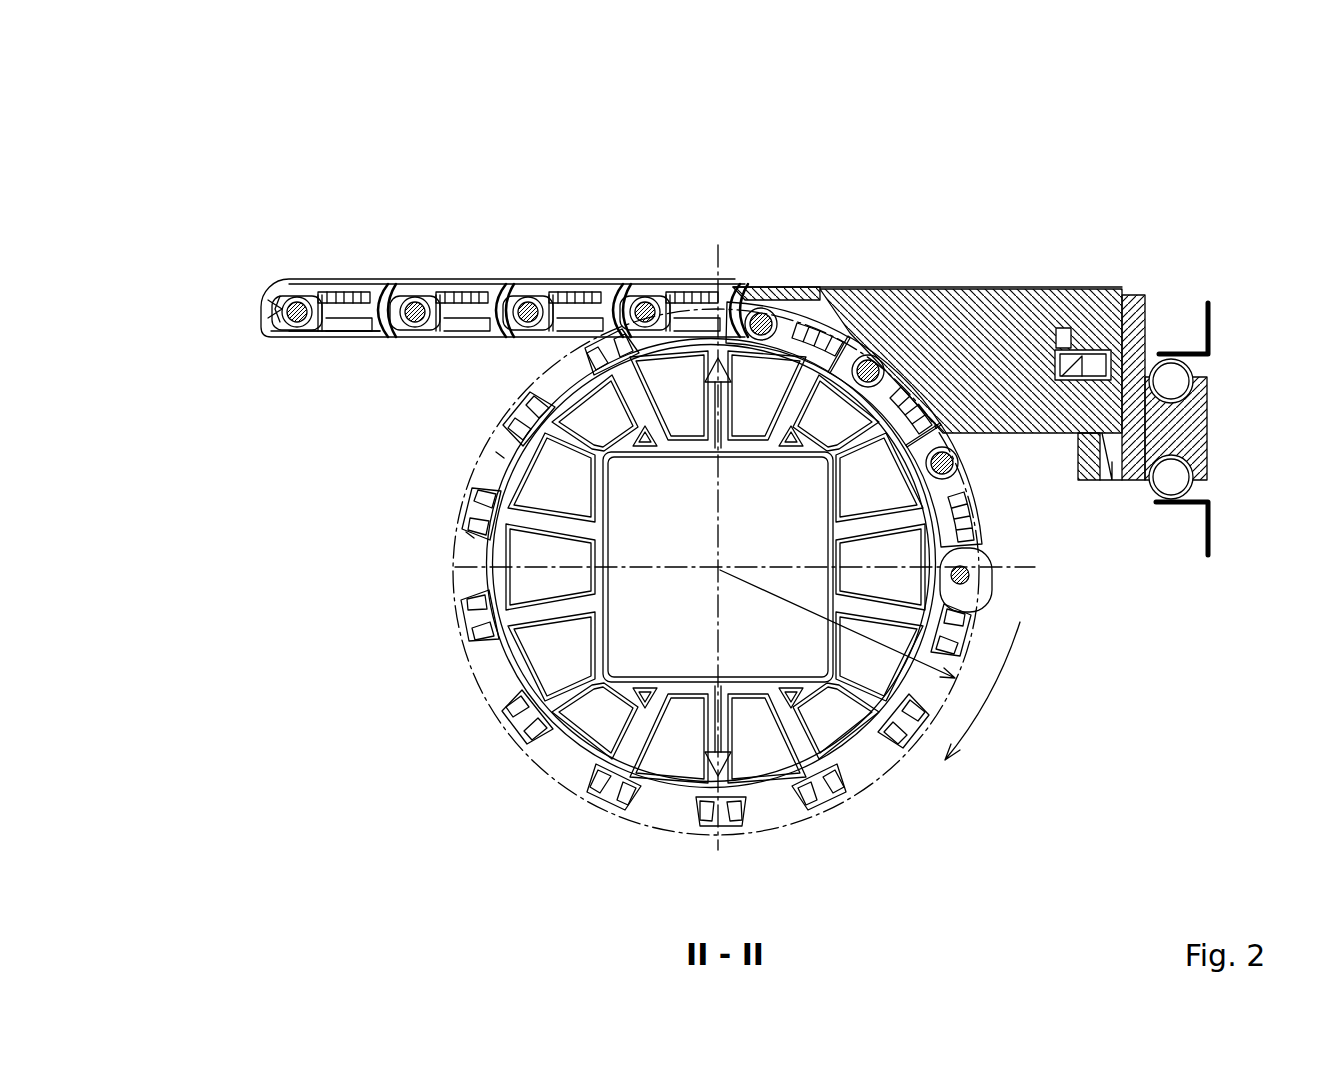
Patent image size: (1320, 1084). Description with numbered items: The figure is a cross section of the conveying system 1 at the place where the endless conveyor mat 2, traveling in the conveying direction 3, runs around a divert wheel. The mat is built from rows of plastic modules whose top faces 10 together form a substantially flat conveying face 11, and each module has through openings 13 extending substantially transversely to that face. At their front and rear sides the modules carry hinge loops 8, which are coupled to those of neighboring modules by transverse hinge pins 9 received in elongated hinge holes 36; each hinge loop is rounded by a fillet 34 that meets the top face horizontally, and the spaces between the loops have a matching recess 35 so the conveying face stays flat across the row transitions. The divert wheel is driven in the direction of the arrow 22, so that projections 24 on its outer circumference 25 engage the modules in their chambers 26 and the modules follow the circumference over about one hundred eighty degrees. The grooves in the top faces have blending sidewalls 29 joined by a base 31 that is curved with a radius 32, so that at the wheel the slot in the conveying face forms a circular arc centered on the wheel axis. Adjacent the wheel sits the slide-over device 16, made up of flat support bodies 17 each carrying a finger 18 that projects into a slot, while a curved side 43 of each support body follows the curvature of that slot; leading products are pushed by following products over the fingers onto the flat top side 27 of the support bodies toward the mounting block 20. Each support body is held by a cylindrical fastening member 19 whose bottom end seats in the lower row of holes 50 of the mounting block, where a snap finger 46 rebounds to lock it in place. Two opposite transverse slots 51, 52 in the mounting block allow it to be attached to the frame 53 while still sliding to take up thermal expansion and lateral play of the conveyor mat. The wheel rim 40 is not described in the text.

The conveying system 1 is at (233, 711).
The conveyor mat 2 is at (612, 298).
The conveying direction 3 is at (418, 128).
The hinge loops 8 is at (980, 572).
The hinge pins 9 is at (408, 330).
The top face 10 is at (358, 292).
The conveying face 11 is at (589, 255).
The through openings 13 is at (322, 325).
The slide-over device 16 is at (1090, 243).
The support bodies 17 is at (1000, 348).
The finger 18 is at (748, 290).
The fastening member 19 is at (1098, 482).
The mounting block 20 is at (1135, 470).
The arrow 22 is at (987, 691).
The projections 24 is at (474, 502).
The outer circumference 25 is at (505, 458).
The chambers 26 is at (350, 325).
The top side 27 is at (930, 291).
The sidewall 29 is at (300, 292).
The base 31 is at (332, 300).
The radius 32 is at (837, 624).
The fillet 34 is at (266, 296).
The recess 35 is at (964, 562).
The hinge hole 36 is at (286, 330).
The wheel rim 40 is at (488, 530).
The curved side 43 is at (818, 318).
The snap finger 46 is at (1088, 358).
The lower row of holes 50 is at (1108, 470).
The slot 51 is at (1195, 378).
The slot 52 is at (1200, 470).
The frame 53 is at (1212, 553).